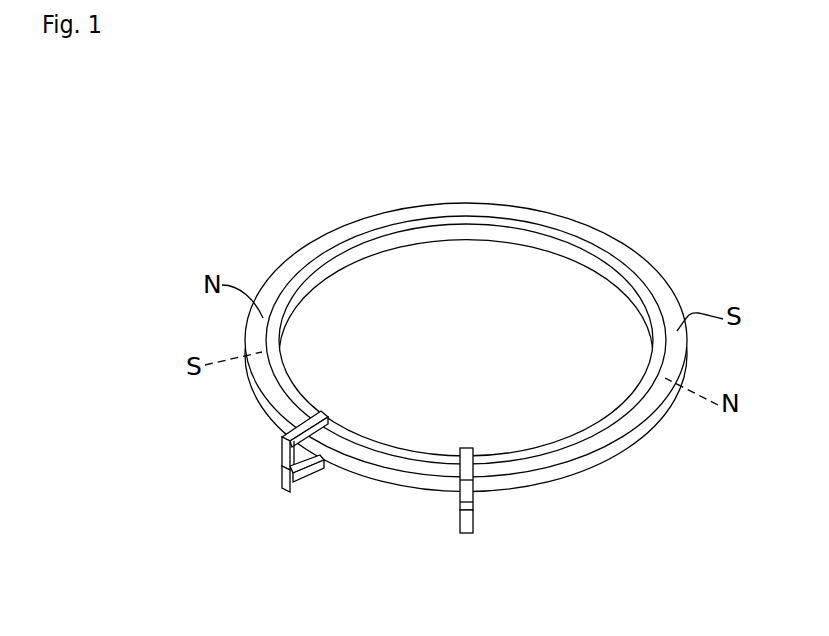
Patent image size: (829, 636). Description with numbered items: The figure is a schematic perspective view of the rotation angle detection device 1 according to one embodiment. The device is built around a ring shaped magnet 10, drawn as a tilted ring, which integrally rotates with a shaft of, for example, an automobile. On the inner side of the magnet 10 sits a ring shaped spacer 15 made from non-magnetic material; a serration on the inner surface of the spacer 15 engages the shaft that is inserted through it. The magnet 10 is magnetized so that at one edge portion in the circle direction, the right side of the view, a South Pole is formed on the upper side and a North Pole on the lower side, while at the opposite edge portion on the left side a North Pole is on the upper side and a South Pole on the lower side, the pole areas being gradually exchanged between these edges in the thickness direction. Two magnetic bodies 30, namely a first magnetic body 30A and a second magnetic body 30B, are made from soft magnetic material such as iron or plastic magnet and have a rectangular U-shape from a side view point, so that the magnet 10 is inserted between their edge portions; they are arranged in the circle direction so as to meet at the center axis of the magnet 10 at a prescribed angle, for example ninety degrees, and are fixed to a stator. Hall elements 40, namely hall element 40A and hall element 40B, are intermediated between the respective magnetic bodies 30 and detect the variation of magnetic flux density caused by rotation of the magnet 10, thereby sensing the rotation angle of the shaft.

The rotation angle detection device 1 is at (466, 291).
The ring shaped magnet 10 is at (598, 231).
The ring shaped spacer 15 is at (450, 218).
The magnetic bodies 30 is at (418, 530).
The magnetic body 30A is at (298, 494).
The magnetic body 30B is at (473, 531).
The hall elements 40 is at (377, 476).
The hall element 40A is at (282, 470).
The hall element 40B is at (473, 503).